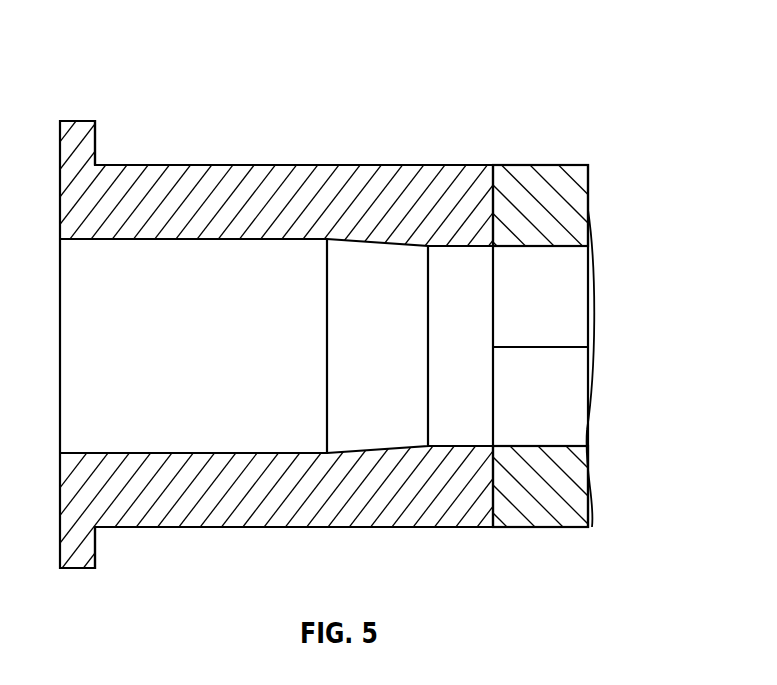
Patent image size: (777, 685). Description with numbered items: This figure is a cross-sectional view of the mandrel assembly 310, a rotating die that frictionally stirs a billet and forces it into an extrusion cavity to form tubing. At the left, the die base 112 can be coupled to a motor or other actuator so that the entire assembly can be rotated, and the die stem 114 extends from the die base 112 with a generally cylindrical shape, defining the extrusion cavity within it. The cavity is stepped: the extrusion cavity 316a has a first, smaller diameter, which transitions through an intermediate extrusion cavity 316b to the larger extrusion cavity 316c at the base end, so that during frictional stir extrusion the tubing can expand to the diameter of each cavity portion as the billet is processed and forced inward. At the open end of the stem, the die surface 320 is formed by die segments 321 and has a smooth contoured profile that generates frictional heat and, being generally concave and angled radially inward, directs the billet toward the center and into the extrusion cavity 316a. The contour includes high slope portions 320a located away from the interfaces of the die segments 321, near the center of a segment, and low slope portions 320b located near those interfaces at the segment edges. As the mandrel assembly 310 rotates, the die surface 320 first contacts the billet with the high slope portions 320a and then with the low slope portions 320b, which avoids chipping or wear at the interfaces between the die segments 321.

The mandrel assembly 310 is at (599, 80).
The die base 112 is at (72, 142).
The die stem 114 is at (218, 522).
The extrusion cavity 316a is at (467, 250).
The intermediate extrusion cavity 316b is at (385, 248).
The extrusion cavity 316c is at (201, 242).
The die surface 320 is at (582, 180).
The high slope portions 320a is at (595, 247).
The low slope portions 320b is at (572, 363).
The die segments 321 is at (587, 467).